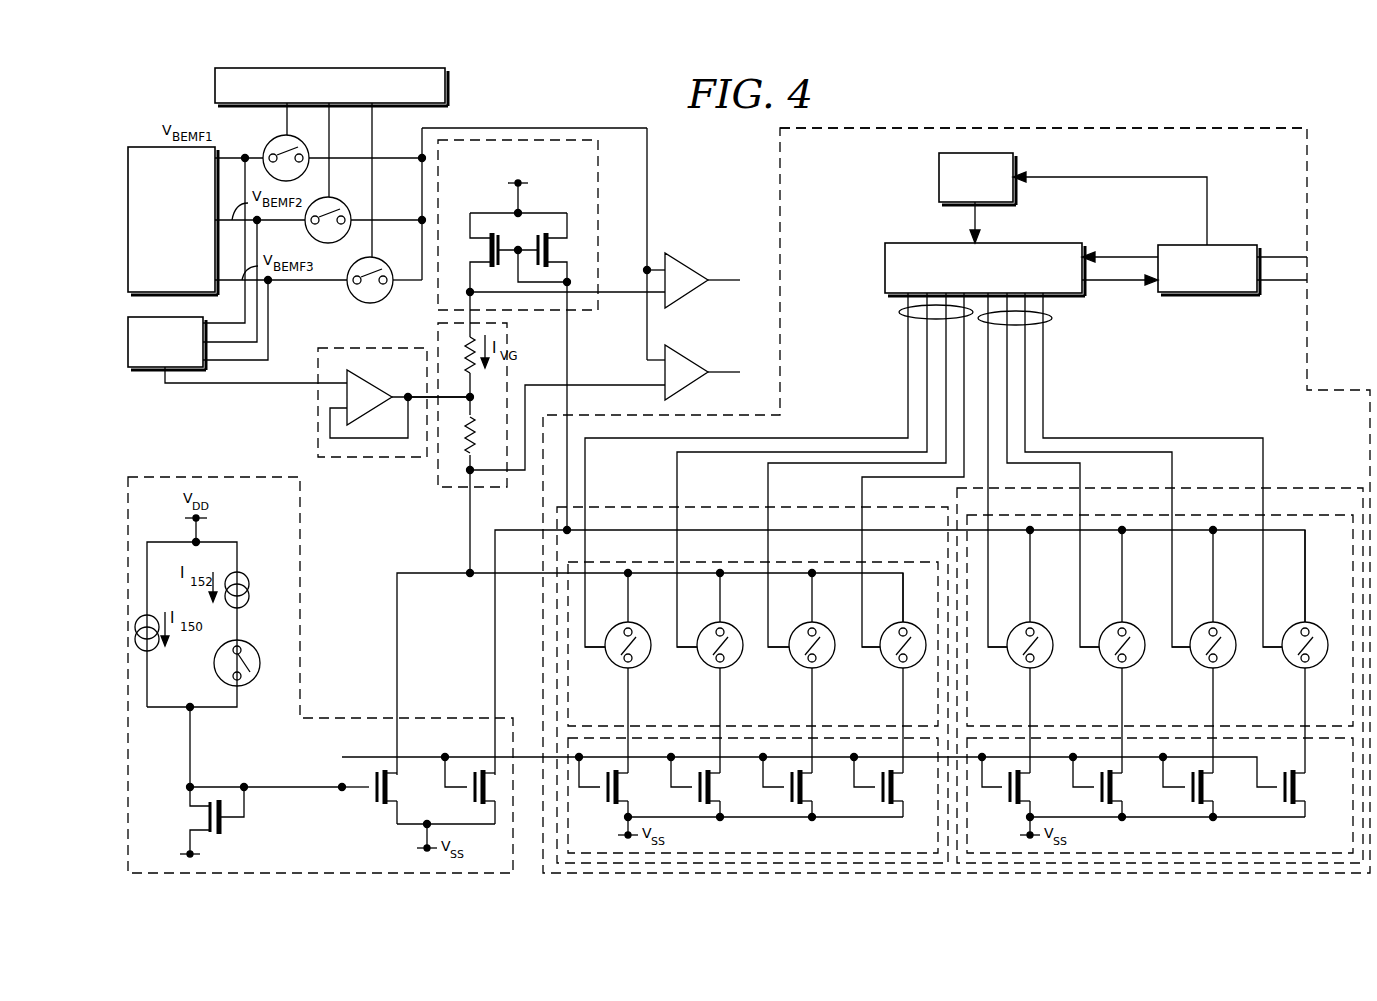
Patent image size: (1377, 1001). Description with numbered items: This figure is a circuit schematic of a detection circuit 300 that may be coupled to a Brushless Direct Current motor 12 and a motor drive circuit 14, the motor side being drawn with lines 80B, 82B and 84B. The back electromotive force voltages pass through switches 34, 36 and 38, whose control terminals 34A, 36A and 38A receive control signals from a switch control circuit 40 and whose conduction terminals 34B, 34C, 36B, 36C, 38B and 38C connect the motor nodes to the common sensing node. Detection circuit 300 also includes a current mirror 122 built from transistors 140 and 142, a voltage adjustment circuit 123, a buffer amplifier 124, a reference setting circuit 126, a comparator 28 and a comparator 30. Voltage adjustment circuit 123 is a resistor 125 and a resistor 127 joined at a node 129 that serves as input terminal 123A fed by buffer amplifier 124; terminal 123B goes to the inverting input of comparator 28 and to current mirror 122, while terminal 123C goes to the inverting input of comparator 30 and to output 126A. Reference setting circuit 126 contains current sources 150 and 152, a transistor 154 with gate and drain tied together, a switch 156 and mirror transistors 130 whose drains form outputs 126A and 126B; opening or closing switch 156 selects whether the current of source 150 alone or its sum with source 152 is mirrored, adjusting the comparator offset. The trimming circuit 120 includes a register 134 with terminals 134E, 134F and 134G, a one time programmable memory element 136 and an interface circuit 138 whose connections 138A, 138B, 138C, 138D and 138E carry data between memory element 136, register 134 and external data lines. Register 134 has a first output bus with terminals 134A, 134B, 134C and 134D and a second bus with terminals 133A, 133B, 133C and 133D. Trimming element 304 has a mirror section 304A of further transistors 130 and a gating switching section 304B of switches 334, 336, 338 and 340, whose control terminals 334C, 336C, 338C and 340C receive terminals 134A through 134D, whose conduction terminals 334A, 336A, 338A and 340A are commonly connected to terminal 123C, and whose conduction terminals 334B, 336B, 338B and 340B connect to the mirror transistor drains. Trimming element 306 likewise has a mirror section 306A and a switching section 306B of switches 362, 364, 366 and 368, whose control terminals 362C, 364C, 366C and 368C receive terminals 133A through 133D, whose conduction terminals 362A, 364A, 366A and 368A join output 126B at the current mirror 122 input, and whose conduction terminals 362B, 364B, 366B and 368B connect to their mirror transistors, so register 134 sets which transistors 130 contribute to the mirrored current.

The detection circuit 300 is at (1280, 110).
The trimming circuit 120 is at (1108, 128).
The switch control circuit 40 is at (446, 88).
The motor drive circuit 14 is at (163, 147).
The Brushless Direct Current (BLDC) motor 12 is at (145, 370).
The switch 34 is at (262, 152).
The control terminal 34A is at (287, 122).
The conduction terminal 34B is at (240, 155).
The conduction terminal 34C is at (346, 157).
The switch 36 is at (340, 238).
The control terminal 36A is at (329, 176).
The conduction terminal 36B is at (300, 221).
The conduction terminal 36C is at (397, 219).
The switch 38 is at (353, 300).
The control terminal 38A is at (372, 243).
The conduction terminal 38B is at (332, 282).
The conduction terminal 38C is at (404, 287).
The motor phase connection 80B is at (245, 316).
The motor phase connection 82B is at (257, 320).
The motor phase connection 84B is at (254, 358).
The comparator 28 is at (688, 262).
The comparator 30 is at (688, 354).
The current mirror 122 is at (542, 225).
The transistor 140 is at (560, 244).
The transistor 142 is at (470, 244).
The voltage adjustment circuit 123 is at (458, 490).
The input terminal 123A is at (434, 394).
The terminal 123B is at (470, 318).
The terminal 123C is at (472, 492).
The buffer amplifier 124 is at (387, 348).
The resistor 125 is at (465, 350).
The resistor 127 is at (482, 438).
The node 129 is at (474, 396).
The reference setting circuit 126 is at (300, 604).
The output terminal 126A is at (397, 695).
The output terminal 126B is at (495, 710).
The transistor 130 is at (622, 790).
The current source 150 is at (152, 654).
The current source 152 is at (240, 575).
The transistor 154 is at (190, 814).
The switch 156 is at (258, 655).
The register 134 is at (910, 243).
The output terminal 134A is at (908, 343).
The output terminal 134B is at (927, 369).
The output terminal 134C is at (946, 393).
The output terminal 134D is at (964, 416).
The register terminal 134E is at (977, 228).
The register input line 134F is at (1104, 252).
The register output line 134G is at (1092, 284).
The output terminal 133A is at (988, 418).
The output terminal 133B is at (1007, 393).
The output terminal 133C is at (1025, 368).
The output terminal 133D is at (1043, 342).
The memory element 136 is at (994, 153).
The interface circuit 138 is at (1225, 295).
The interface circuit output line 138A is at (1208, 237).
The interface circuit output line 138B is at (1146, 254).
The interface circuit input line 138C is at (1140, 282).
The interface circuit external line 138D is at (1268, 254).
The interface circuit external line 138E is at (1276, 284).
The trimming element 304 is at (796, 506).
The mirror section 304A is at (753, 795).
The switching section 304B is at (613, 562).
The trimming element 306 is at (1108, 487).
The mirror section 306A is at (1160, 795).
The switching section 306B is at (1090, 515).
The switch 334 is at (647, 658).
The conduction terminal 334A is at (630, 604).
The conduction terminal 334B is at (630, 678).
The control terminal 334C is at (590, 650).
The switch 336 is at (739, 658).
The conduction terminal 336A is at (722, 604).
The conduction terminal 336B is at (722, 678).
The control terminal 336C is at (682, 650).
The switch 338 is at (831, 658).
The conduction terminal 338A is at (814, 604).
The conduction terminal 338B is at (814, 678).
The control terminal 338C is at (774, 650).
The switch 340 is at (922, 658).
The conduction terminal 340A is at (905, 604).
The conduction terminal 340B is at (905, 678).
The control terminal 340C is at (867, 650).
The switch 362 is at (1049, 658).
The conduction terminal 362A is at (1032, 604).
The conduction terminal 362B is at (1032, 678).
The control terminal 362C is at (992, 650).
The switch 364 is at (1141, 658).
The conduction terminal 364A is at (1124, 604).
The conduction terminal 364B is at (1124, 678).
The control terminal 364C is at (1086, 650).
The switch 366 is at (1232, 658).
The conduction terminal 366A is at (1215, 604).
The conduction terminal 366B is at (1215, 678).
The control terminal 366C is at (1178, 650).
The switch 368 is at (1324, 658).
The conduction terminal 368A is at (1307, 604).
The conduction terminal 368B is at (1307, 678).
The control terminal 368C is at (1270, 650).